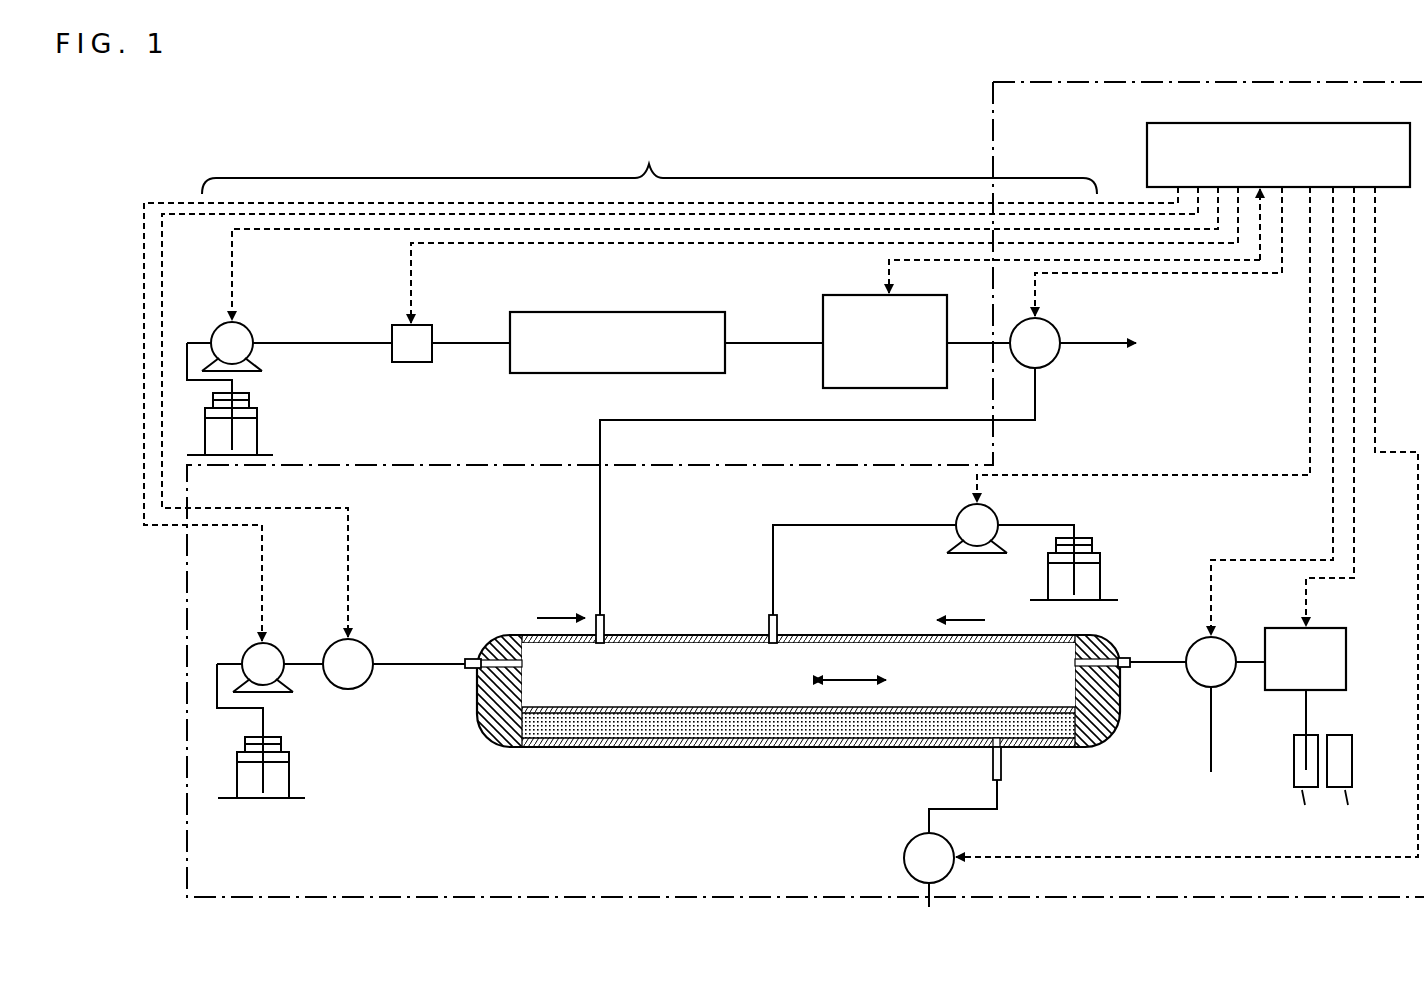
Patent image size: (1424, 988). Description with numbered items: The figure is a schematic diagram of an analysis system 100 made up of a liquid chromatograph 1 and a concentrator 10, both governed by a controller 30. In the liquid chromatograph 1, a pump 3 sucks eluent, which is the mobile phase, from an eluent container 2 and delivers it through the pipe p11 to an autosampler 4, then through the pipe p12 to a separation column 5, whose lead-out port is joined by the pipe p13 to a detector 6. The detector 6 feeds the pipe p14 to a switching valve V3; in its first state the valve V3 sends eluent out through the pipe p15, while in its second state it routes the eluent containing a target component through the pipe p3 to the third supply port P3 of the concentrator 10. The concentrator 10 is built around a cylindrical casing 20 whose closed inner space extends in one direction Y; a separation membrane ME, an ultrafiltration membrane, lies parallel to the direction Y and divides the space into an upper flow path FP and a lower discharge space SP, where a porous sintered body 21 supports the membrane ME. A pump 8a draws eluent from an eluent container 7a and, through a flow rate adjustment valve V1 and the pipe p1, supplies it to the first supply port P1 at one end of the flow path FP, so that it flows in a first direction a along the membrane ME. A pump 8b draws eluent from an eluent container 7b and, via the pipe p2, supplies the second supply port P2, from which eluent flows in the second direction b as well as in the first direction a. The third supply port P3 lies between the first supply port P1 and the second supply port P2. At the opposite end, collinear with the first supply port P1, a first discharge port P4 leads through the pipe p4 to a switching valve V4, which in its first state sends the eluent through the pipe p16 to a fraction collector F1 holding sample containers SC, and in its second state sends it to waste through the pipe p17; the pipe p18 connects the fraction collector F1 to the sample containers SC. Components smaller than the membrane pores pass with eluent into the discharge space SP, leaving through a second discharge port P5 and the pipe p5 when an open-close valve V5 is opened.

The analysis system 100 is at (170, 138).
The liquid chromatograph 1 is at (649, 165).
The concentrator 10 is at (990, 140).
The controller 30 is at (1350, 123).
The eluent container 2 is at (205, 438).
The pump 3 is at (240, 324).
The pipe p11 is at (338, 338).
The autosampler 4 is at (430, 327).
The pipe p12 is at (481, 338).
The separation column 5 is at (708, 312).
The pipe p13 is at (770, 340).
The detector 6 is at (905, 295).
The pipe p14 is at (963, 338).
The switching valve V3 is at (1052, 322).
The pipe p15 is at (1115, 338).
The pipe p3 is at (602, 525).
The pipe p2 is at (772, 566).
The pump 8b is at (990, 508).
The eluent container 7b is at (1088, 538).
The pump 8a is at (272, 646).
The eluent container 7a is at (236, 792).
The flow rate adjustment valve V1 is at (347, 689).
The pipe p1 is at (413, 662).
The casing 20 is at (590, 750).
The flow path FP is at (757, 692).
The separation membrane ME is at (925, 707).
The porous sintered body 21 is at (680, 736).
The discharge space SP is at (785, 724).
The one direction Y is at (843, 680).
The first direction a is at (561, 605).
The second direction b is at (961, 606).
The first supply port P1 is at (475, 656).
The second supply port P2 is at (780, 626).
The third supply port P3 is at (608, 626).
The first discharge port P4 is at (1110, 657).
The second discharge port P5 is at (1001, 768).
The pipe p4 is at (1148, 666).
The switching valve V4 is at (1200, 641).
The pipe p16 is at (1240, 665).
The pipe p17 is at (1210, 752).
The fraction collector F1 is at (1330, 628).
The pipe p18 is at (1308, 722).
The sample container SC is at (1342, 789).
The pipe p5 is at (1000, 802).
The open-close valve V5 is at (945, 840).